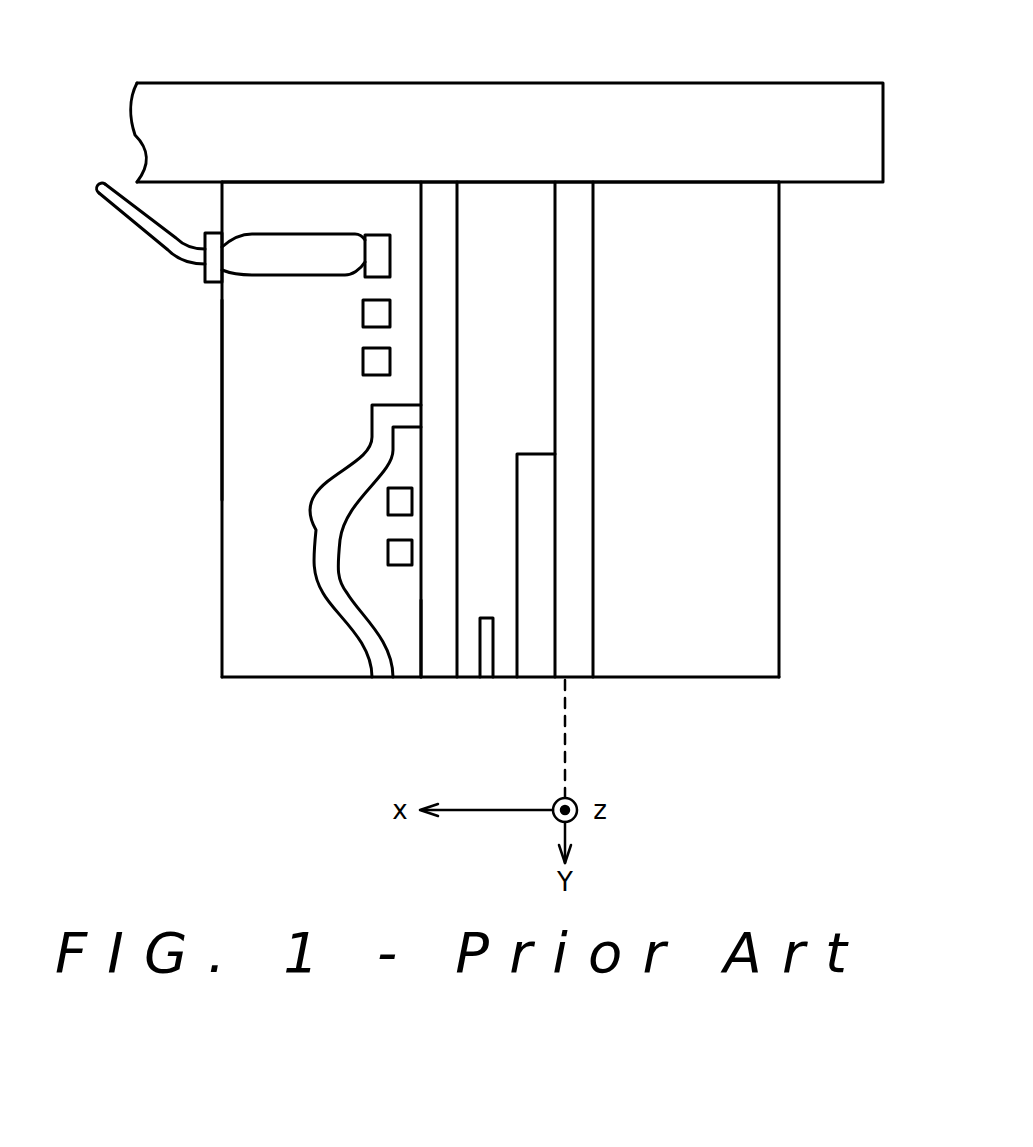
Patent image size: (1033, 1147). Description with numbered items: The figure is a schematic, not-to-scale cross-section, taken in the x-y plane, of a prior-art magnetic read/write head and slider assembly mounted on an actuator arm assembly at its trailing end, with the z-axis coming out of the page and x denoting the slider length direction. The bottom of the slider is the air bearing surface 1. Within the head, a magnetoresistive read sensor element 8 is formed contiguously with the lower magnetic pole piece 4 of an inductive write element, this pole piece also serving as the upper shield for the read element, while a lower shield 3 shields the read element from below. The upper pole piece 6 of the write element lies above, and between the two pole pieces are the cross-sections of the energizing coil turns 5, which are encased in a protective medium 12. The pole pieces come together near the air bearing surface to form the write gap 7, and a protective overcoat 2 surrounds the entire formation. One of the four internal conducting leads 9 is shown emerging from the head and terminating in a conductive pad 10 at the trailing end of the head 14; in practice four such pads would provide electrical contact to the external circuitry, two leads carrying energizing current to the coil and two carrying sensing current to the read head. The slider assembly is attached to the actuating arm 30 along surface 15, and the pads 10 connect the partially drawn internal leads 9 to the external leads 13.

The air bearing surface 1 is at (267, 677).
The protective overcoat 2 is at (252, 632).
The lower shield 3 is at (572, 648).
The lower magnetic pole piece 4 is at (465, 653).
The energizing coil turns 5 is at (400, 503).
The upper pole piece 6 is at (333, 592).
The write gap 7 is at (405, 667).
The magnetoresistive read sensor element 8 is at (488, 667).
The internal conducting lead 9 is at (298, 260).
The conductive pad 10 is at (215, 272).
The protective medium 12 is at (357, 552).
The external lead 13 is at (137, 226).
The trailing end of the head 14 is at (222, 395).
The connecting surface 15 is at (317, 180).
The actuating arm 30 is at (230, 130).